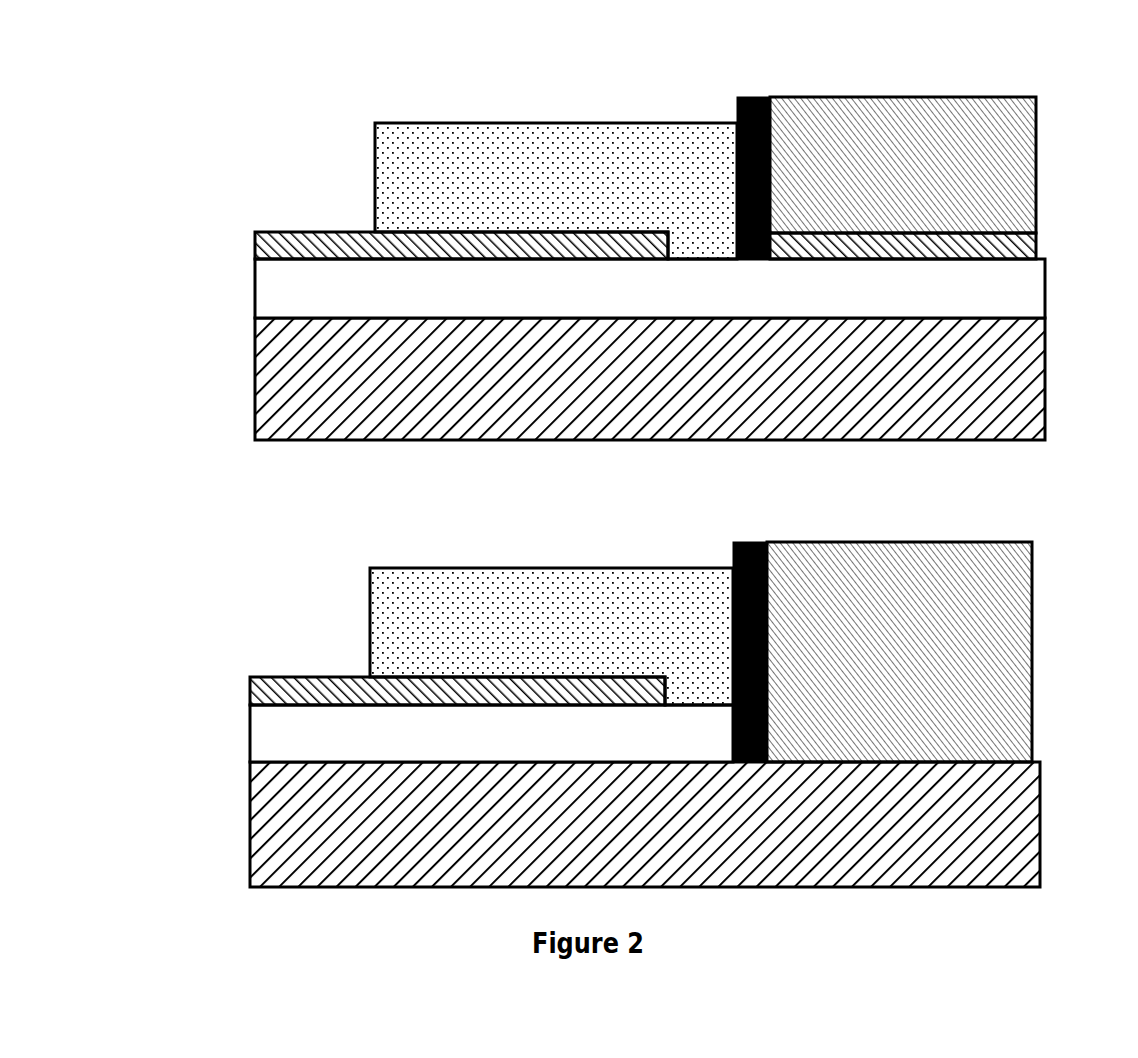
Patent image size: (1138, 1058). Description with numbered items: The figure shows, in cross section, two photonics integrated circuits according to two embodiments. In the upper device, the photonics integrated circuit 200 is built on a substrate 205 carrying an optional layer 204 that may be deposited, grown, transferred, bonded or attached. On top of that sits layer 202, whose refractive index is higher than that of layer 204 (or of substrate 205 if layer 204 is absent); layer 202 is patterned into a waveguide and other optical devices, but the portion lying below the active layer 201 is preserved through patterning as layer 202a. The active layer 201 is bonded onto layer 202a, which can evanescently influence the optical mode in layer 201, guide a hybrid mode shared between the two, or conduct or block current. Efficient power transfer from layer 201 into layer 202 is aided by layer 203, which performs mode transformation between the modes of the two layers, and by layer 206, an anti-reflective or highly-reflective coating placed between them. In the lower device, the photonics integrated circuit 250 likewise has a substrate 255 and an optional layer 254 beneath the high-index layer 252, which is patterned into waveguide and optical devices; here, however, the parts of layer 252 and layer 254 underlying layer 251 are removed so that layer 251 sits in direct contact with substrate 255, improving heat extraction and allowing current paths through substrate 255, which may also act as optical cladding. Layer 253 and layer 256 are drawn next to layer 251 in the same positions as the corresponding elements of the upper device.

The photonics integrated circuit 200 is at (208, 134).
The active layer 201 is at (1003, 113).
The layer 202 is at (300, 244).
The preserved part of layer 202 202a is at (1040, 233).
The mode transformation layer 203 is at (520, 168).
The optional layer 204 is at (272, 287).
The substrate 205 is at (270, 371).
The anti-reflective or highly-reflective coating 206 is at (737, 107).
The photonics integrated circuit 250 is at (201, 581).
The layer 251 is at (1000, 555).
The layer 252 is at (303, 687).
The layer 253 is at (515, 613).
The optional layer 254 is at (267, 731).
The substrate 255 is at (268, 815).
The layer 256 is at (733, 550).